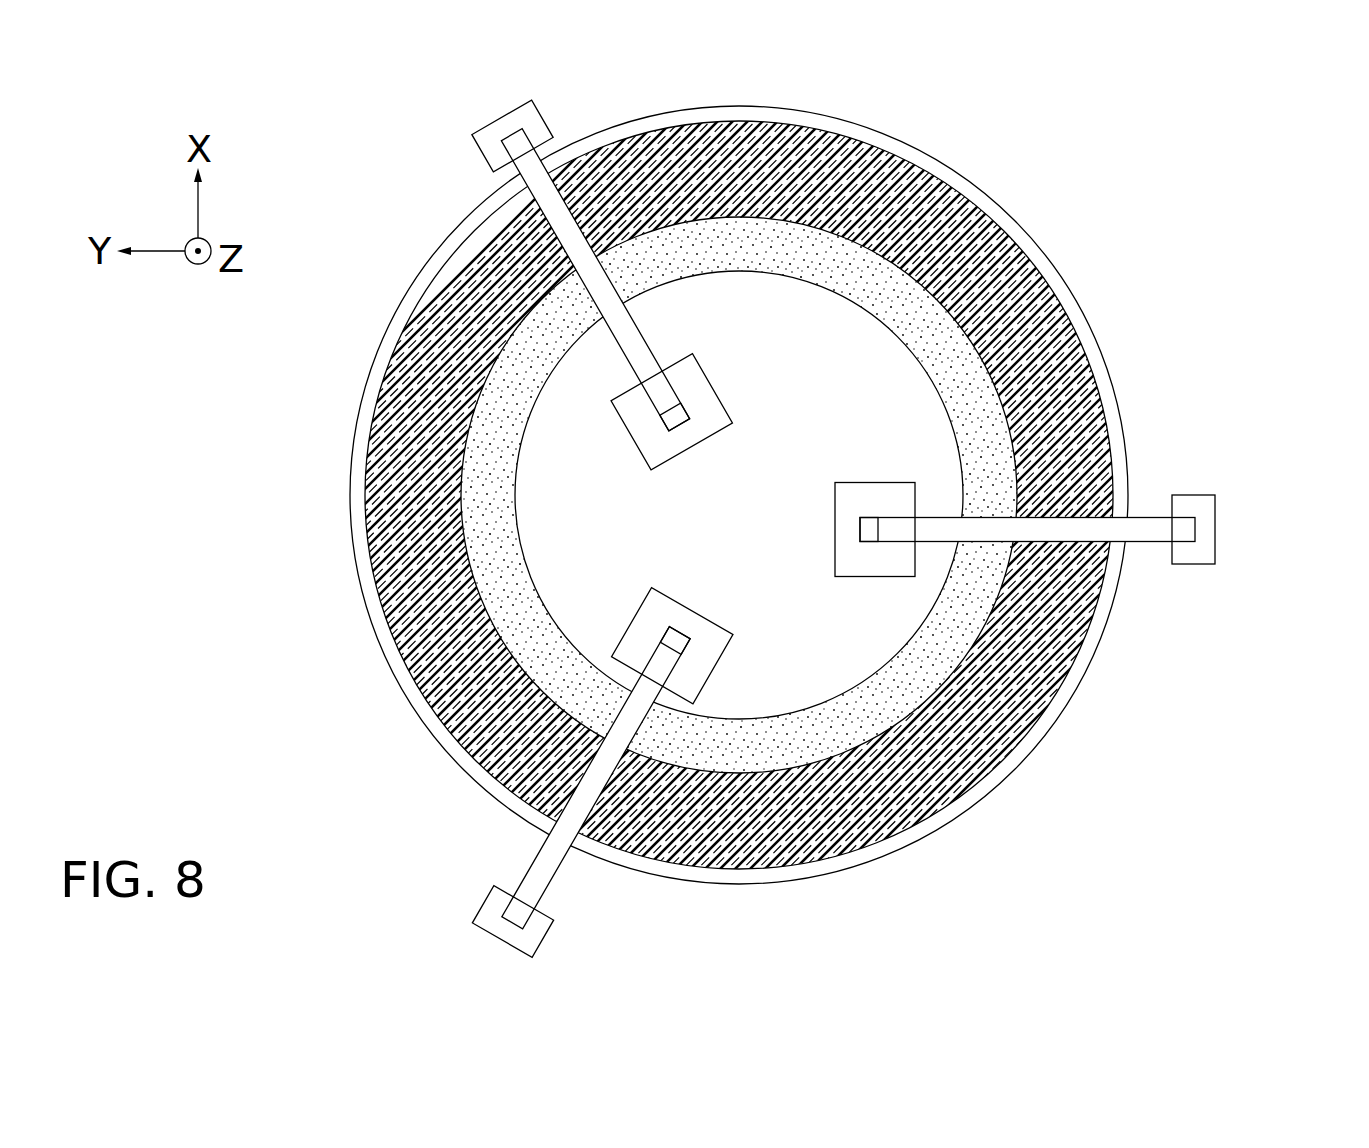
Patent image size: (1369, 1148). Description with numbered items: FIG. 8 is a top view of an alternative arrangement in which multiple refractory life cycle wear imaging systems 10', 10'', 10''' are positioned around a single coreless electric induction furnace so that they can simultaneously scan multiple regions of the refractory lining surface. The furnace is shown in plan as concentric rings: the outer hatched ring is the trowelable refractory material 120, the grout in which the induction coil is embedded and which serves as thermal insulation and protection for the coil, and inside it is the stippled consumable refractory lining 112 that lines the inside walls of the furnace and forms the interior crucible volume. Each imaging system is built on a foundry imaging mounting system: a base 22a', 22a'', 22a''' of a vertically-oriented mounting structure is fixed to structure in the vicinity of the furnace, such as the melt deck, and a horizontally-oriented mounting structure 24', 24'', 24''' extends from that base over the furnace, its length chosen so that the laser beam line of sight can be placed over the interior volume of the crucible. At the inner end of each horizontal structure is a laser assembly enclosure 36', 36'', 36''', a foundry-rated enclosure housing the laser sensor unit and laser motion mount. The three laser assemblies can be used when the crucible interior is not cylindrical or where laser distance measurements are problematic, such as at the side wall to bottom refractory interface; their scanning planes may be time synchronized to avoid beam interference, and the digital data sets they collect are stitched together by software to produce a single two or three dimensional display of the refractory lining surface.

The refractory life cycle wear imaging and image processing system 10' is at (1085, 521).
The refractory life cycle wear imaging and image processing system 10'' is at (576, 751).
The refractory life cycle wear imaging and image processing system 10''' is at (607, 257).
The base 22a' is at (1193, 529).
The base 22a'' is at (512, 922).
The base 22a''' is at (512, 136).
The horizontally-oriented mounting structure 24' is at (1027, 530).
The horizontally-oriented mounting structure 24'' is at (596, 778).
The horizontally-oriented mounting structure 24''' is at (595, 280).
The laser assembly enclosure 36' is at (875, 530).
The laser assembly enclosure 36'' is at (672, 646).
The laser assembly enclosure 36''' is at (671, 412).
The trowelable refractory material 120 is at (972, 221).
The consumable refractory lining 112 is at (948, 362).